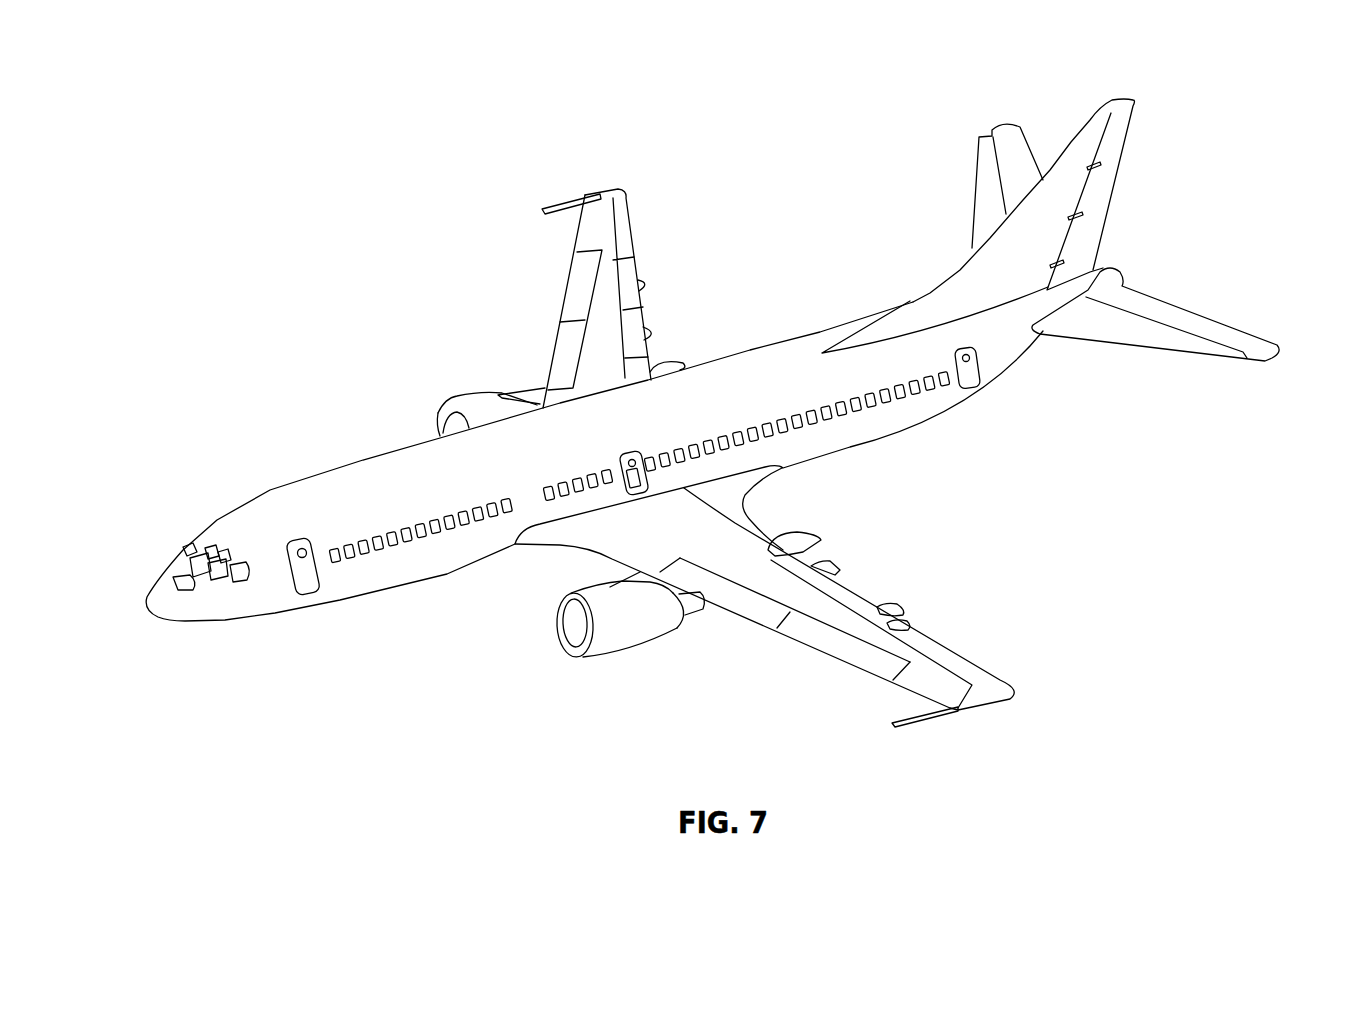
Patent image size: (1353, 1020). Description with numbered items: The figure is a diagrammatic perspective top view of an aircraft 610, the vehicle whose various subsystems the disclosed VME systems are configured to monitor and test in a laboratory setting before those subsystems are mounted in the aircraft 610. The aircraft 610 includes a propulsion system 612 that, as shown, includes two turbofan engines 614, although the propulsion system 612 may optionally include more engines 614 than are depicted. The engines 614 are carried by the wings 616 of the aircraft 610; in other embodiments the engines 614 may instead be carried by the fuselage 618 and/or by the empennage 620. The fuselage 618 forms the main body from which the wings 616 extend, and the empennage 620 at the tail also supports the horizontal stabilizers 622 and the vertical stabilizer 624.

The aircraft 610 is at (400, 157).
The propulsion system 612 is at (527, 709).
The turbofan engines 614 is at (483, 392).
The wings 616 is at (608, 194).
The fuselage 618 is at (383, 573).
The empennage 620 is at (866, 296).
The horizontal stabilizers 622 is at (1008, 128).
The vertical stabilizer 624 is at (1103, 112).